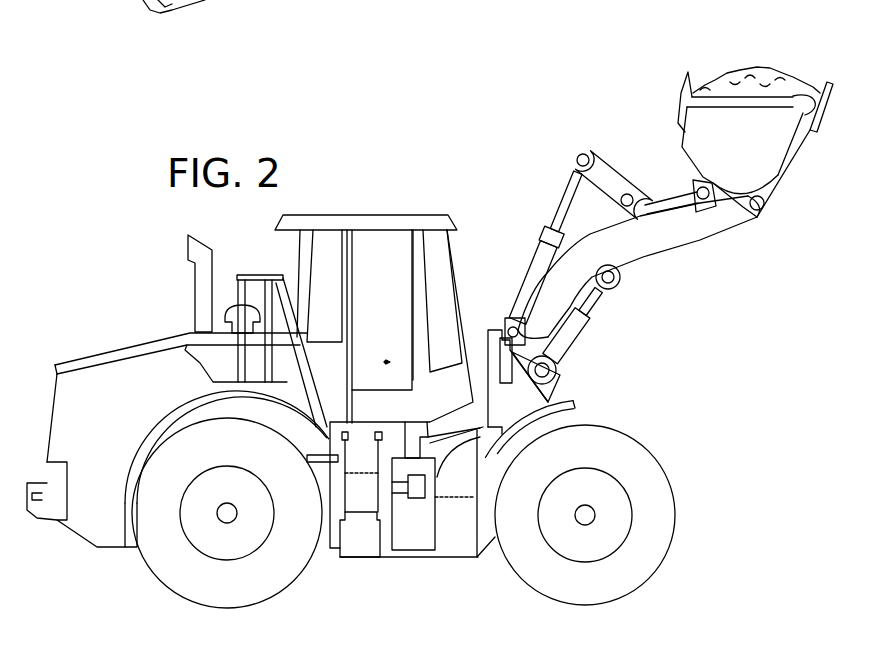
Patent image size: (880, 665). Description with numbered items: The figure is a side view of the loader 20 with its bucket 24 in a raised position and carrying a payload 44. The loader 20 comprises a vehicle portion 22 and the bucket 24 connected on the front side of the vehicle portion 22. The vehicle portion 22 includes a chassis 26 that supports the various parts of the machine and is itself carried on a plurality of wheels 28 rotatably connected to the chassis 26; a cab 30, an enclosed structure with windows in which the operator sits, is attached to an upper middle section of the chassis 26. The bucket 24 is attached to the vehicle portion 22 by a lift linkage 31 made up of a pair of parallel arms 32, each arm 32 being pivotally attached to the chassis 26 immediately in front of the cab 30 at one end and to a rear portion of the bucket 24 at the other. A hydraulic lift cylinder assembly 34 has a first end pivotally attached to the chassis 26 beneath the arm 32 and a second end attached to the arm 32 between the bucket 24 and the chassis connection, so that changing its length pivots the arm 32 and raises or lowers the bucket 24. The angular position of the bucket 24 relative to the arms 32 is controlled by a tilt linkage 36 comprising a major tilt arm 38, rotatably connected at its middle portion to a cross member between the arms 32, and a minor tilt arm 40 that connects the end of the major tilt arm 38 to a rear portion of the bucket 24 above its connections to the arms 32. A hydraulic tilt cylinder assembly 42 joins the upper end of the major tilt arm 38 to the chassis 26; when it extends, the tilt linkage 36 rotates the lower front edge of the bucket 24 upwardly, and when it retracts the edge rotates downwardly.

The loader 20 is at (452, 192).
The vehicle portion 22 is at (145, 318).
The bucket 24 is at (713, 143).
The chassis 26 is at (520, 407).
The wheels 28 is at (304, 519).
The cab 30 is at (394, 280).
The lift linkage 31 is at (676, 303).
The arm 32 is at (651, 252).
The hydraulic lift cylinder assembly 34 is at (586, 336).
The tilt linkage 36 is at (630, 158).
The major tilt arm 38 is at (576, 163).
The minor tilt arm 40 is at (688, 203).
The hydraulic tilt cylinder assembly 42 is at (540, 255).
The payload 44 is at (710, 60).